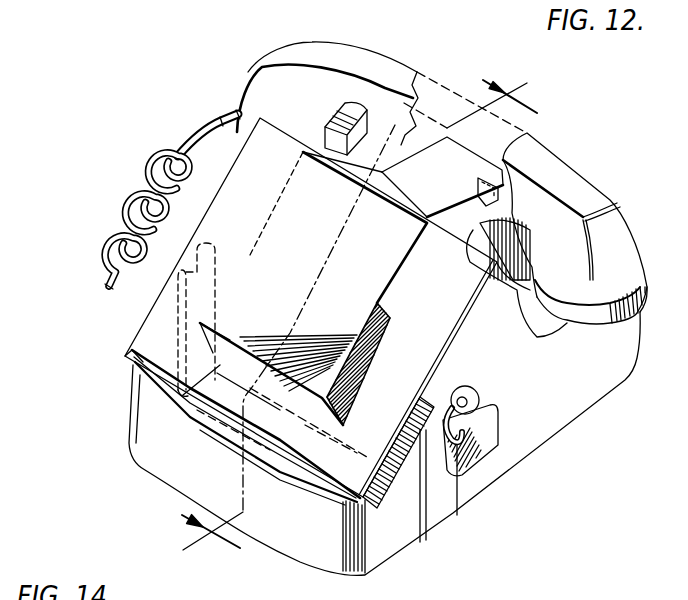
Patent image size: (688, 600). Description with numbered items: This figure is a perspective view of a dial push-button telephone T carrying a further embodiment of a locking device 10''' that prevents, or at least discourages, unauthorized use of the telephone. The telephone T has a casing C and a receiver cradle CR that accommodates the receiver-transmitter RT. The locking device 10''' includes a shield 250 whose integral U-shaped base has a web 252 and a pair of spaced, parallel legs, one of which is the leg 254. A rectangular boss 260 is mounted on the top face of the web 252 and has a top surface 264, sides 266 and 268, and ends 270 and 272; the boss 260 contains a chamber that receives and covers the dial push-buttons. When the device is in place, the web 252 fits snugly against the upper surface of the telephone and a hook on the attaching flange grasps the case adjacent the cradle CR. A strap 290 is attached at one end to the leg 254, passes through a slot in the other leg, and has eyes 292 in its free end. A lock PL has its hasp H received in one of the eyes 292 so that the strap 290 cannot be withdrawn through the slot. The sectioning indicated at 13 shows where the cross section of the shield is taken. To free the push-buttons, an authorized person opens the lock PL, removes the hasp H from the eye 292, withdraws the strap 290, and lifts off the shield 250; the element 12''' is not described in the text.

The locking device 10''' is at (143, 250).
The lock housing 12''' is at (169, 326).
The section line 13- 13 is at (354, 305).
The shield 250 is at (383, 523).
The web 252 is at (350, 457).
The leg 254 is at (133, 372).
The rectangular boss 260 is at (285, 233).
The top surface 264 is at (352, 313).
The side 266 is at (270, 190).
The side 268 is at (393, 298).
The end 270 is at (390, 200).
The end 272 is at (290, 386).
The strap 290 is at (440, 505).
The eyes 292 is at (470, 398).
The receiver cradle CR is at (352, 120).
The receiver-transmitter RT is at (553, 176).
The hasp H is at (453, 382).
The lock PL is at (493, 417).
The casing C is at (531, 431).
The telephone T is at (497, 492).